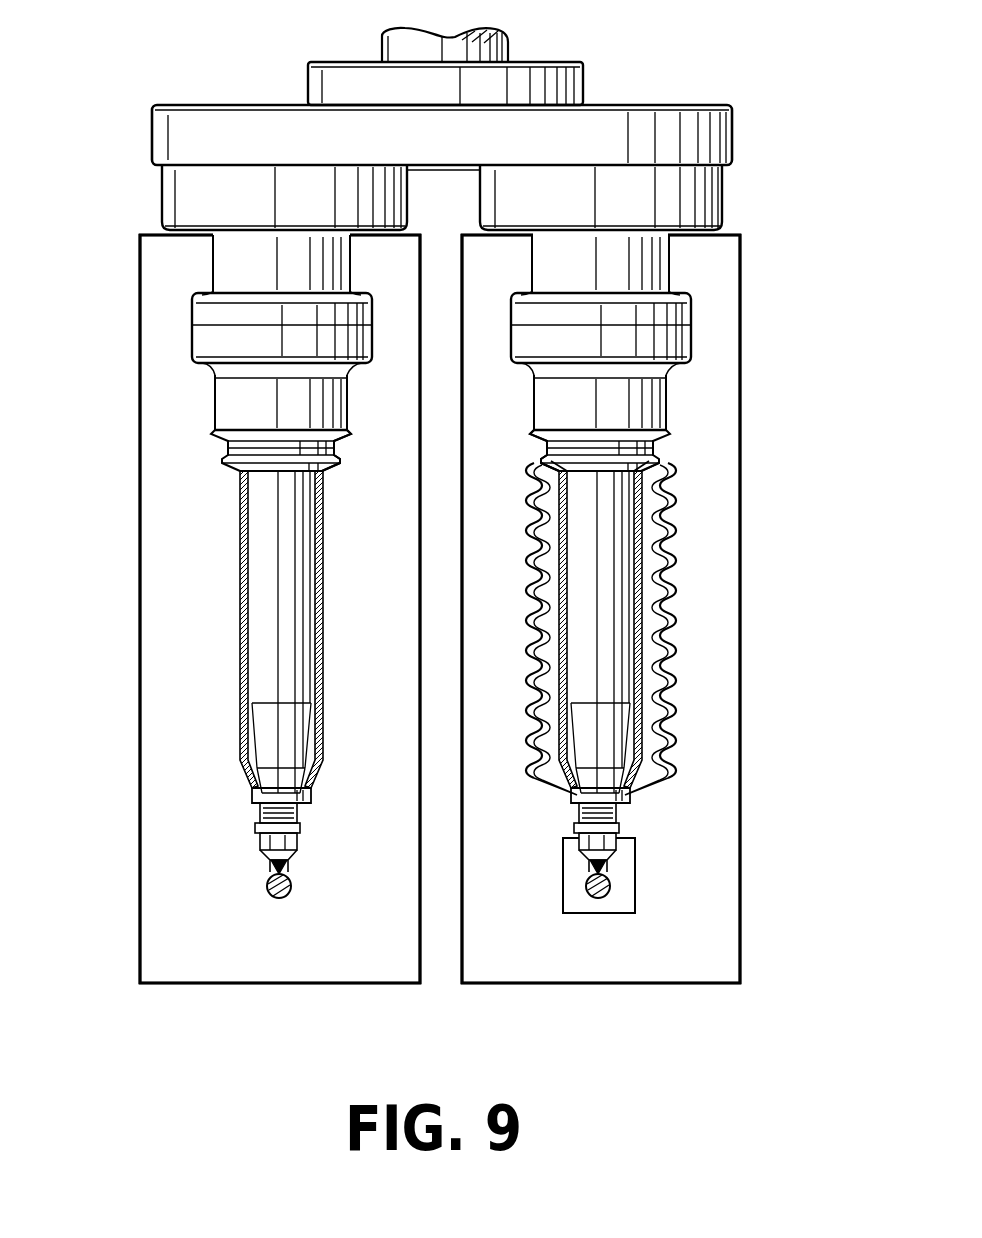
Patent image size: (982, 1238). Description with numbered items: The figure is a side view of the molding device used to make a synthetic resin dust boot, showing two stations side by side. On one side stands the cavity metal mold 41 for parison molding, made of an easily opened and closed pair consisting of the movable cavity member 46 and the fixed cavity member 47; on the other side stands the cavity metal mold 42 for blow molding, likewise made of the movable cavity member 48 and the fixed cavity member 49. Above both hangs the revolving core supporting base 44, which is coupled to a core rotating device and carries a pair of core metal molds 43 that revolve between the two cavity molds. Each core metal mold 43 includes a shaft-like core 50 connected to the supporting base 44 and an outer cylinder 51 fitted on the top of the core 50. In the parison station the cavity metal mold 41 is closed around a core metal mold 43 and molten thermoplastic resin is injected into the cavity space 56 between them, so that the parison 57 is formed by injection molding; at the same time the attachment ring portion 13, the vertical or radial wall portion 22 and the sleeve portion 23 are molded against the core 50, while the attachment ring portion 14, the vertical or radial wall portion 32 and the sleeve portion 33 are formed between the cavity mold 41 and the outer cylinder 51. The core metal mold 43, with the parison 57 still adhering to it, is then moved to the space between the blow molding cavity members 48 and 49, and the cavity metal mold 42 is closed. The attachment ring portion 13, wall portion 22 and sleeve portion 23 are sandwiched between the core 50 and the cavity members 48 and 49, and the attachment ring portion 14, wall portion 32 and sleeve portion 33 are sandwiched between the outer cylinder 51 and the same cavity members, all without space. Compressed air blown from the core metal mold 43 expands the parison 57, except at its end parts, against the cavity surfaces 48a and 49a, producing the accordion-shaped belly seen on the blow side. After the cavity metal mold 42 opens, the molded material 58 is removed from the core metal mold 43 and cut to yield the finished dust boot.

The attachment ring portion 13 is at (269, 823).
The attachment ring portion 14 is at (233, 446).
The vertical or radial wall portion 22 is at (578, 808).
The sleeve portion 23 is at (306, 793).
The vertical or radial wall portion 32 is at (543, 447).
The sleeve portion 33 is at (343, 450).
The cavity metal mold for parison molding 41 is at (160, 667).
The cavity metal mold for blow molding 42 is at (720, 670).
The core metal mold 43 is at (259, 557).
The revolving core supporting base 44 is at (685, 128).
The movable cavity member for parison molding 46 is at (253, 983).
The fixed cavity member for parison molding 47 is at (280, 657).
The movable cavity member for blow molding 48 is at (583, 983).
The cavity surface 48a is at (652, 530).
The fixed cavity member for blow molding 49 is at (601, 657).
The cavity surface 49a is at (722, 622).
The shaft-like core 50 is at (257, 741).
The outer cylinder 51 is at (228, 407).
The cavity space 56 is at (243, 510).
The parison 57 is at (241, 612).
The molded material 58 is at (653, 777).